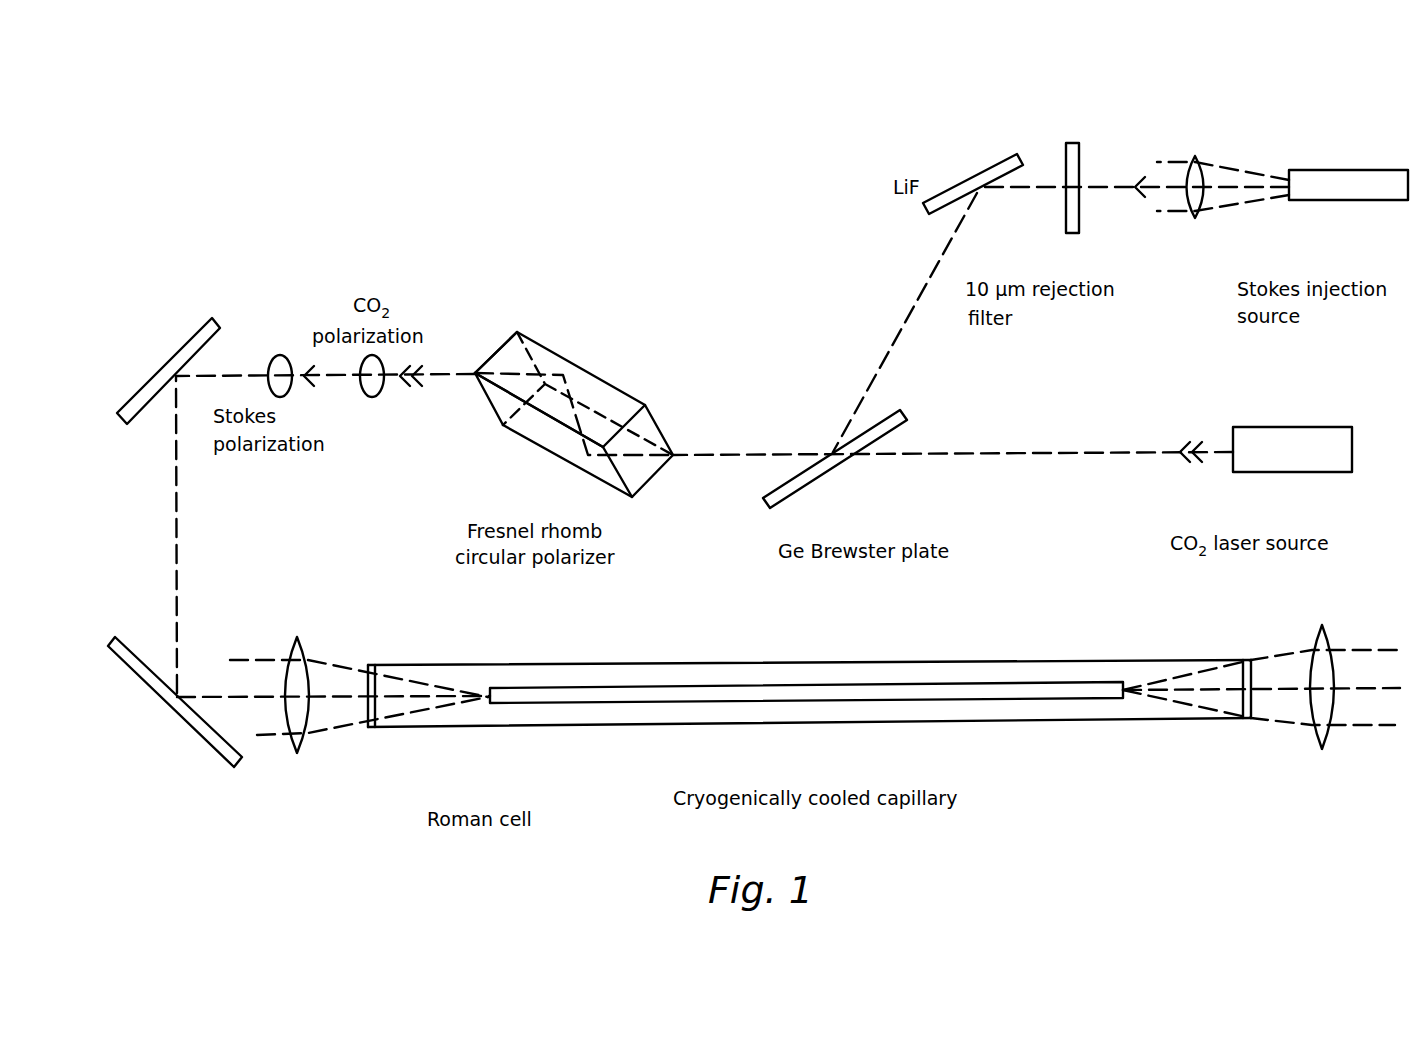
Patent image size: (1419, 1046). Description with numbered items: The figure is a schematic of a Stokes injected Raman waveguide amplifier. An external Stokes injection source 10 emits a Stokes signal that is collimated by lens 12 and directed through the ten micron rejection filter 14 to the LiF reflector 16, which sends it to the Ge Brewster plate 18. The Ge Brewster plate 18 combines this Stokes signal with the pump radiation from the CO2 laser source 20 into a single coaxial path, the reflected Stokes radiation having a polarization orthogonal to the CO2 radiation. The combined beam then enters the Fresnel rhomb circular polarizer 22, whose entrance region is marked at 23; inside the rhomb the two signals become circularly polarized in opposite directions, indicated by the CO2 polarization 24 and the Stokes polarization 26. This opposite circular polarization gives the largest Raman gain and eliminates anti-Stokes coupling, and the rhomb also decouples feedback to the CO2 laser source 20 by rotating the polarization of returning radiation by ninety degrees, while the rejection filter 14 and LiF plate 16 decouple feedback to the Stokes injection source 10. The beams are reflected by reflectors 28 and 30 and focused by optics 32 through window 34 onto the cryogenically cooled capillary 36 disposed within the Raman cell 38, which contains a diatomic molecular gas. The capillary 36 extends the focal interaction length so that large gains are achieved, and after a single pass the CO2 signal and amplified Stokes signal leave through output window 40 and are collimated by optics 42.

The Stokes injection source 10 is at (1352, 201).
The lens 12 is at (1193, 157).
The 10 μm rejection filter 14 is at (1064, 215).
The LiF reflector 16 is at (960, 185).
The Ge Brewster plate 18 is at (815, 478).
The CO2 laser source 20 is at (1297, 473).
The Fresnel rhomb circular polarizer 22 is at (562, 440).
The entrance face of Fresnel rhomb 23 is at (510, 360).
The CO2 circular polarization 24 is at (376, 398).
The Stokes circular polarization 26 is at (278, 356).
The reflector 28 is at (170, 356).
The reflector 30 is at (185, 725).
The optics 32 is at (293, 753).
The window 34 is at (370, 728).
The cryogenically cooled capillary 36 is at (792, 692).
The Raman cell 38 is at (465, 717).
The output window 40 is at (1247, 719).
The optics 42 is at (1320, 732).